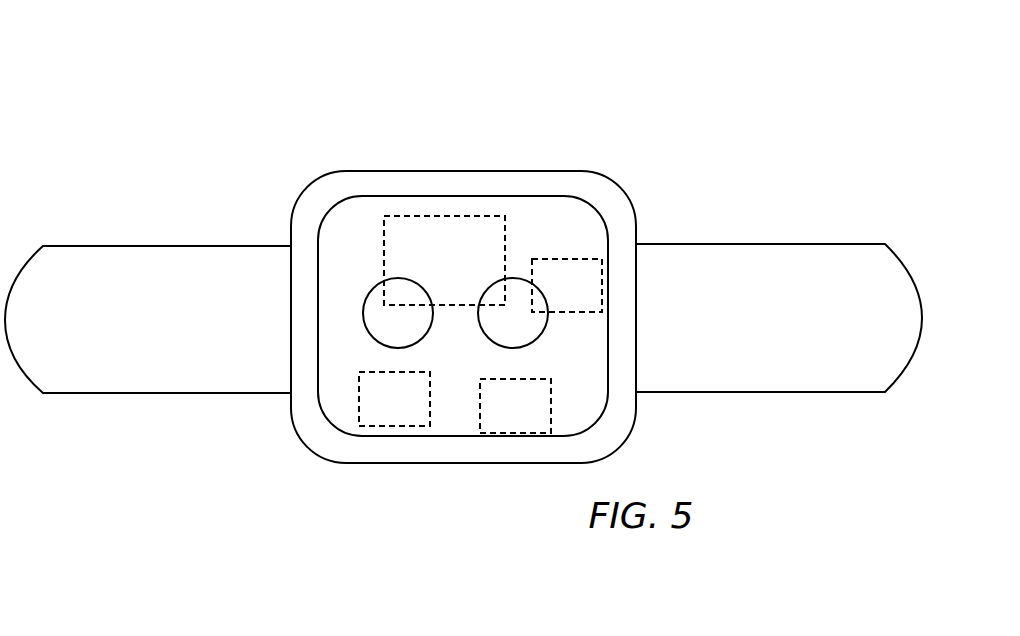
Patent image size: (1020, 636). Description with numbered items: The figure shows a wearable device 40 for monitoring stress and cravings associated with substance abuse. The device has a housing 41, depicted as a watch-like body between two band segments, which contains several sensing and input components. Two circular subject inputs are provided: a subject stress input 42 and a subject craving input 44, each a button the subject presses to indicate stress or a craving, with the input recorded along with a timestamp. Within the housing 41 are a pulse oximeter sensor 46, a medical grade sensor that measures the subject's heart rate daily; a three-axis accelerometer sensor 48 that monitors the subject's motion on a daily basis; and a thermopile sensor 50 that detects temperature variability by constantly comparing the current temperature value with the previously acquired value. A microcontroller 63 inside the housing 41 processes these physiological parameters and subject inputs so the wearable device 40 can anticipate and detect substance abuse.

The wearable device 40 is at (463, 296).
The housing 41 is at (527, 188).
The subject stress input 42 is at (410, 323).
The subject craving input 44 is at (507, 315).
The pulse oximeter sensor 46 is at (578, 283).
The 3-axis accelerometer sensor 48 is at (402, 412).
The thermopile sensor 50 is at (522, 403).
The microcontroller 63 is at (455, 257).